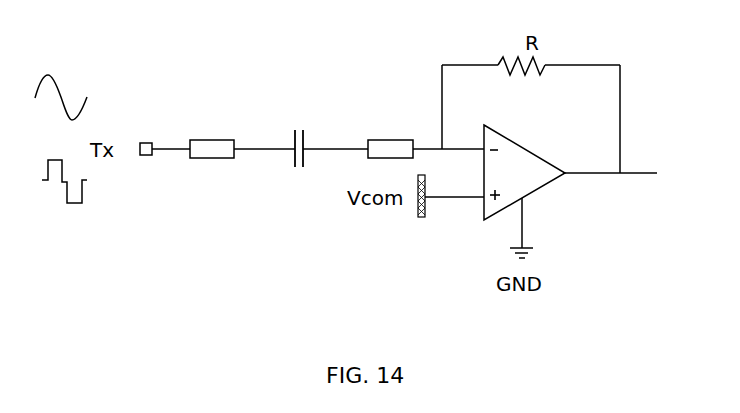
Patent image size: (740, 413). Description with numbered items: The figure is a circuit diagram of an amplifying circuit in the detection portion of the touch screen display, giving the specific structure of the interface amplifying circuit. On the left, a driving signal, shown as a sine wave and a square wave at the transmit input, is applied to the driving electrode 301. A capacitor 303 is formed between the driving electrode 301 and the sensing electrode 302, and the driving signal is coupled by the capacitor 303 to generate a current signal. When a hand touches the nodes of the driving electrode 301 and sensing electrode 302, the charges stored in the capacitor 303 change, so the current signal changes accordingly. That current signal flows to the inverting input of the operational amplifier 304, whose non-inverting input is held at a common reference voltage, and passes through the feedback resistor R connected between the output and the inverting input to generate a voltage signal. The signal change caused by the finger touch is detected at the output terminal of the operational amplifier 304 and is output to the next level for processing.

The driving electrode 301 is at (222, 138).
The sensing electrode 302 is at (392, 140).
The capacitor 303 is at (295, 173).
The operational amplifier 304 is at (538, 190).